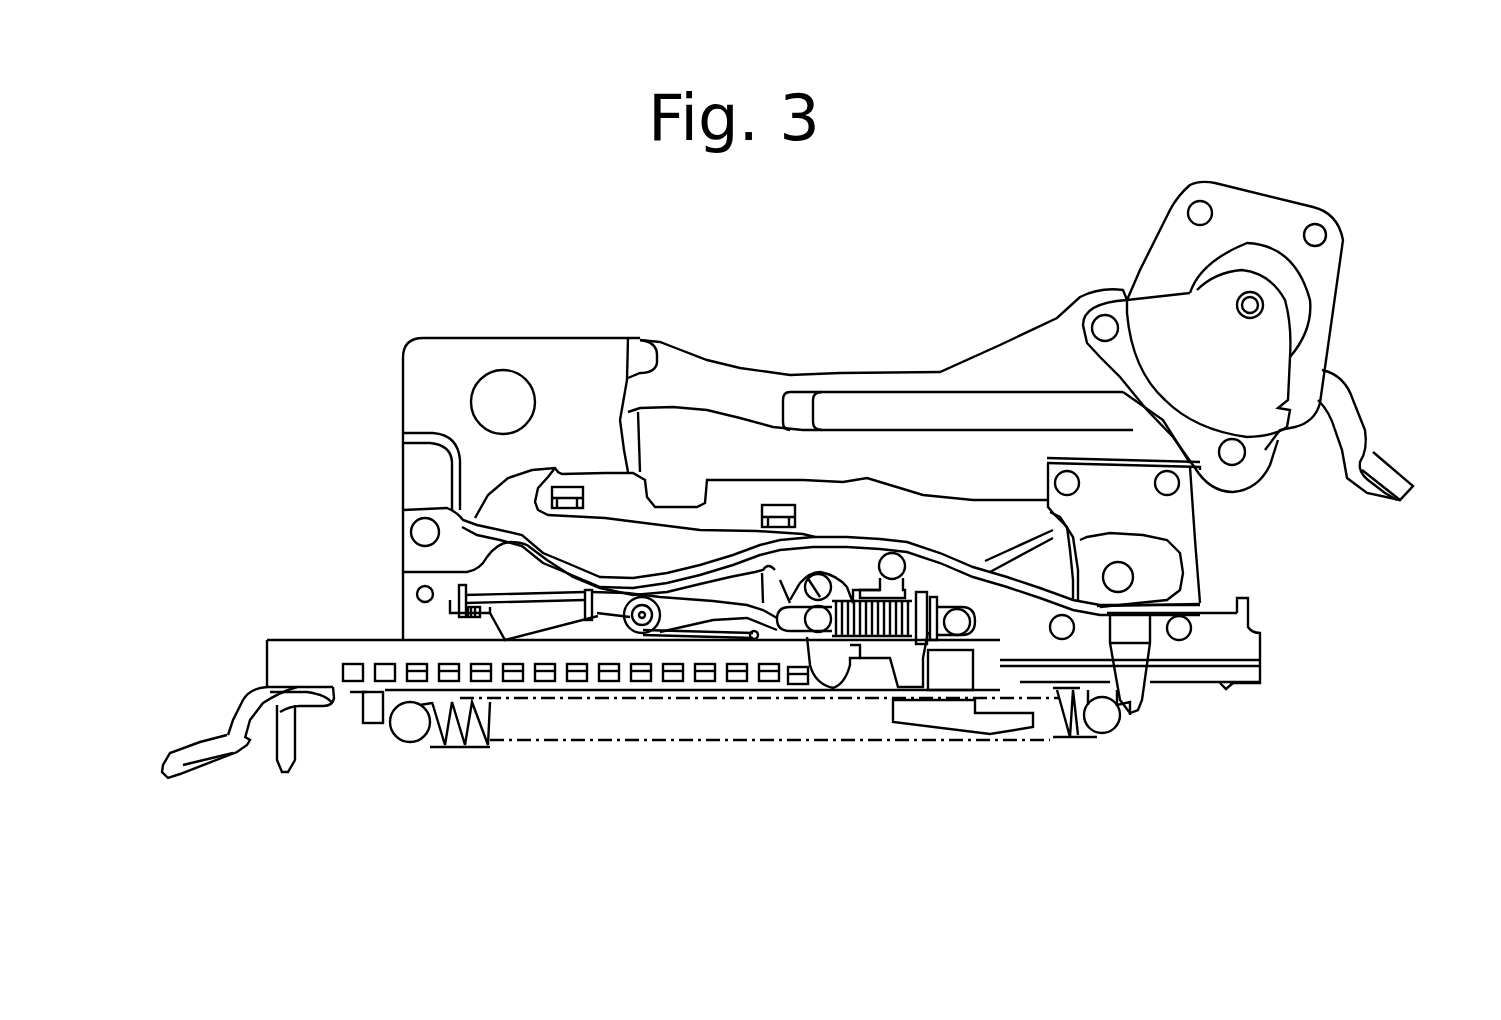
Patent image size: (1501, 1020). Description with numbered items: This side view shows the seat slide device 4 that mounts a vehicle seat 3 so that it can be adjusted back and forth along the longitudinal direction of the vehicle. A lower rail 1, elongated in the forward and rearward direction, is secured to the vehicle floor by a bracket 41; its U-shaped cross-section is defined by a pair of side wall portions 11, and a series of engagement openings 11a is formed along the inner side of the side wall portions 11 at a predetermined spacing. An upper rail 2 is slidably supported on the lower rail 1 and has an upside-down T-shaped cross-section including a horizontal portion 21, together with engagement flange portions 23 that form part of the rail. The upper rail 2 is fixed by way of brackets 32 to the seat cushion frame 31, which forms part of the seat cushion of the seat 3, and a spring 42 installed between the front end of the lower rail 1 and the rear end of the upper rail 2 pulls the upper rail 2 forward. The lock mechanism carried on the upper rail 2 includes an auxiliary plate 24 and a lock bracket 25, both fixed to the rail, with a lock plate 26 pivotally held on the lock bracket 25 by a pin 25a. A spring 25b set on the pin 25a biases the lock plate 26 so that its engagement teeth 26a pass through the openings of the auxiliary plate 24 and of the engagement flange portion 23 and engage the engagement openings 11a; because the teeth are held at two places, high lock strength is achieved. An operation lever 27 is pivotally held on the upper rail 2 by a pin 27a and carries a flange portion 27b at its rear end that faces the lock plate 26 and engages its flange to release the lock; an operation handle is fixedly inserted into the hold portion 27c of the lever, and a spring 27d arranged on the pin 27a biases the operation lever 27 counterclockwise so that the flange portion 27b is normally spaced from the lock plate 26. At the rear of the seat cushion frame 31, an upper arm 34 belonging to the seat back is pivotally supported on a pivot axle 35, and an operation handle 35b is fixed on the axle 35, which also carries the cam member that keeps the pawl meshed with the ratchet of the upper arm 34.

The lower rail 1 is at (270, 632).
The upper rail 2 is at (1270, 632).
The vehicle seat 3 is at (497, 322).
The seat slide device 4 is at (378, 535).
The side wall portions 11 is at (311, 676).
The engagement openings 11a is at (545, 722).
The horizontal portion 21 is at (1025, 636).
The engagement flange portions 23 is at (1073, 732).
The auxiliary plates 24 is at (832, 658).
The lock bracket 25 is at (830, 604).
The pin 25a is at (924, 600).
The spring 25b is at (880, 642).
The lock plate 26 is at (878, 668).
The engagement teeth 26a is at (857, 678).
The operation lever 27 is at (710, 605).
The pin 27a is at (640, 627).
The flange portion 27b is at (890, 580).
The hold portion 27c is at (490, 627).
The spring 27d is at (685, 640).
The seat cushion frame 31 is at (580, 360).
The brackets 32 is at (1160, 522).
The upper arm 34 is at (1285, 210).
The pivot axle 35 is at (1252, 305).
The operation handle 35b is at (1350, 418).
The brackets 41 is at (200, 755).
The spring 42 is at (437, 748).